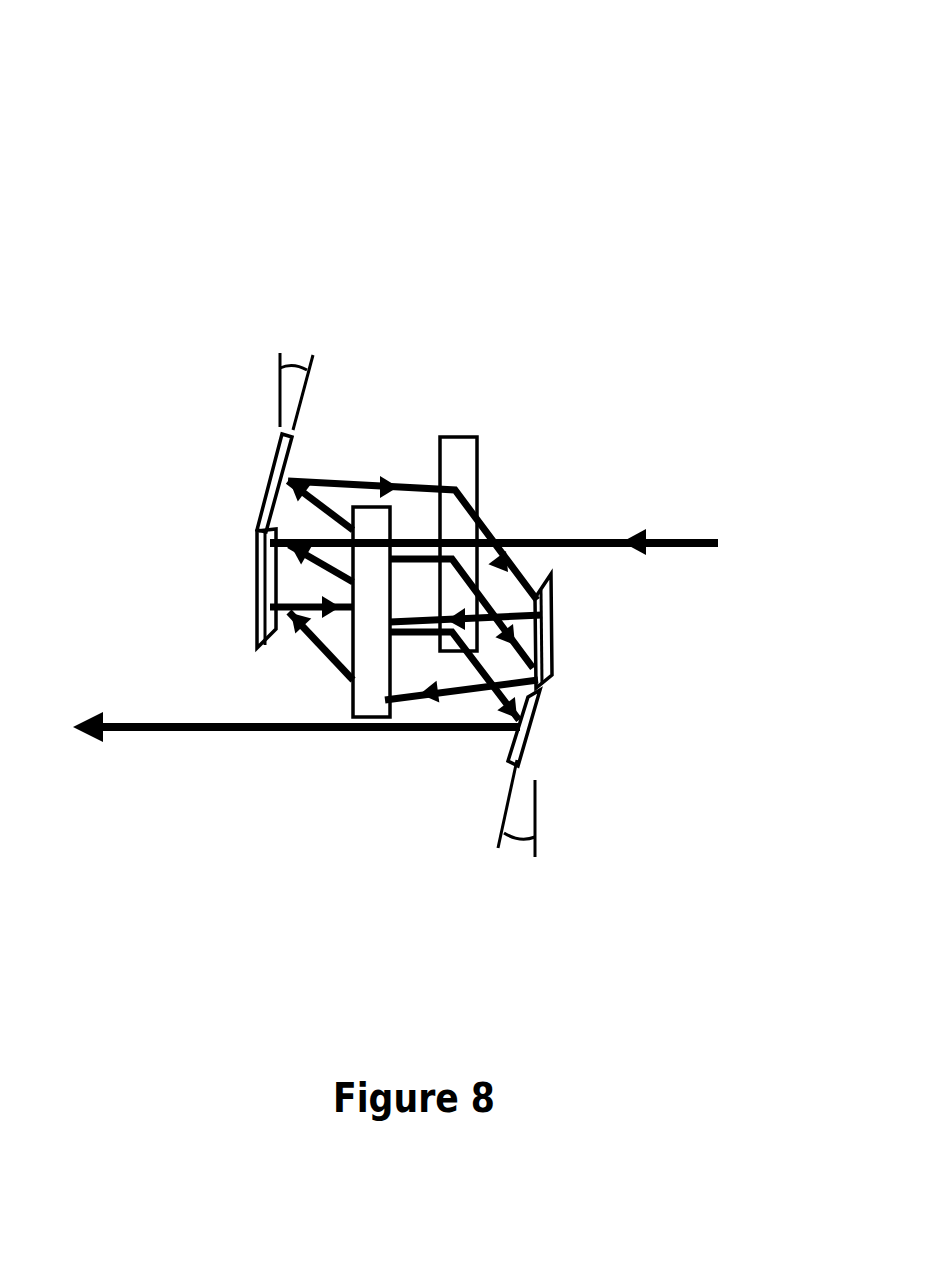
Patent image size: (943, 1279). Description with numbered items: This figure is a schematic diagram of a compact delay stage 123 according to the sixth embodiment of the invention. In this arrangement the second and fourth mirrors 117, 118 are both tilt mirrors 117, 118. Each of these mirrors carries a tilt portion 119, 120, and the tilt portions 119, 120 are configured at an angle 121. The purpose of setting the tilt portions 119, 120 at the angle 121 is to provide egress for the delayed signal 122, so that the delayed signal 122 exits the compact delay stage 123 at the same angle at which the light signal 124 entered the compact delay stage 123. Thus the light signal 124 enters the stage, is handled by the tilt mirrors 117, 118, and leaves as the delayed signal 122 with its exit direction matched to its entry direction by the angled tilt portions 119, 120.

The second mirror 117 is at (185, 528).
The fourth mirror 118 is at (553, 645).
The tilt portion 119 is at (301, 442).
The tilt portion 120 is at (508, 748).
The angle 121 is at (297, 358).
The delayed signal 122 is at (107, 732).
The compact delay stage 123 is at (101, 63).
The light signal 124 is at (648, 538).